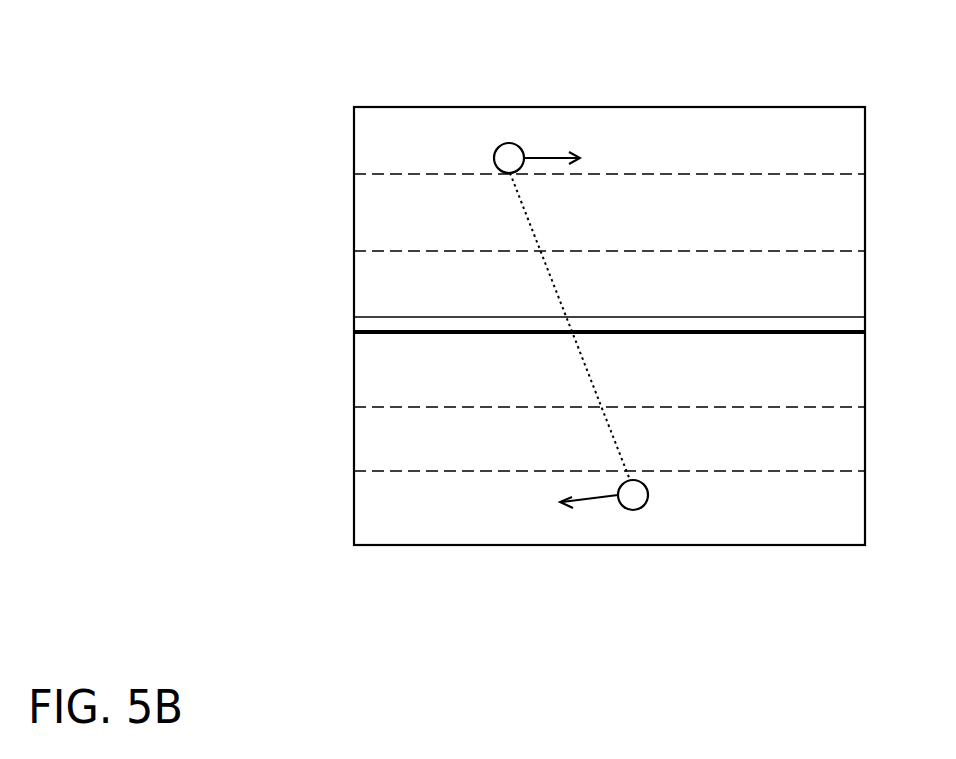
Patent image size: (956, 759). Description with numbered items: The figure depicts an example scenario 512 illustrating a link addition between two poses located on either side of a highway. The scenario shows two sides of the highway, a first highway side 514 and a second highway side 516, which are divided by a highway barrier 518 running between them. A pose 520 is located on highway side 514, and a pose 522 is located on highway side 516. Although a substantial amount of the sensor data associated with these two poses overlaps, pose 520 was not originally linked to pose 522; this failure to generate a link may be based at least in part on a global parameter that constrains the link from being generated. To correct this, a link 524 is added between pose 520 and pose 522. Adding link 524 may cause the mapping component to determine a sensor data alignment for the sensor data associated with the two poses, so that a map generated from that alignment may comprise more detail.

The example scenario 512 is at (253, 45).
The highway side 514 is at (306, 196).
The highway side 516 is at (306, 431).
The highway barrier 518 is at (354, 317).
The pose 520 is at (508, 143).
The pose 522 is at (647, 498).
The link 524 is at (558, 295).